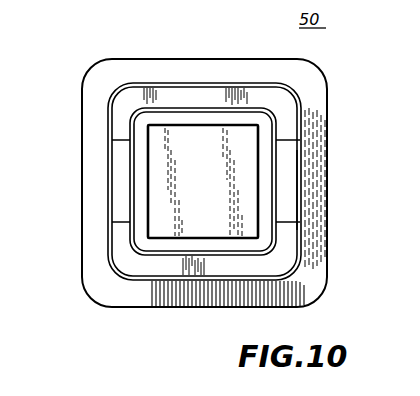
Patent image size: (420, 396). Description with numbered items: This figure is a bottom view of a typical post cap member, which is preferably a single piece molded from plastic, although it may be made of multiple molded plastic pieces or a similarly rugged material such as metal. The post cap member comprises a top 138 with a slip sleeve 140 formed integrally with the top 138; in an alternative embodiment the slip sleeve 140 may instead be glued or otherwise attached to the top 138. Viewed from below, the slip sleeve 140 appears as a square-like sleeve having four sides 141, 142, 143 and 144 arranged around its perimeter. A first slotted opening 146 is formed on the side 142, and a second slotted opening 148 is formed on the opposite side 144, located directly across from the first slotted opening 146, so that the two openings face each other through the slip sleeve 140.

The top 138 is at (321, 83).
The slip sleeve 140 is at (188, 95).
The side 141 is at (206, 278).
The side 142 is at (110, 151).
The side 143 is at (247, 83).
The side 144 is at (302, 129).
The first slotted opening 146 is at (120, 180).
The second slotted opening 148 is at (292, 194).